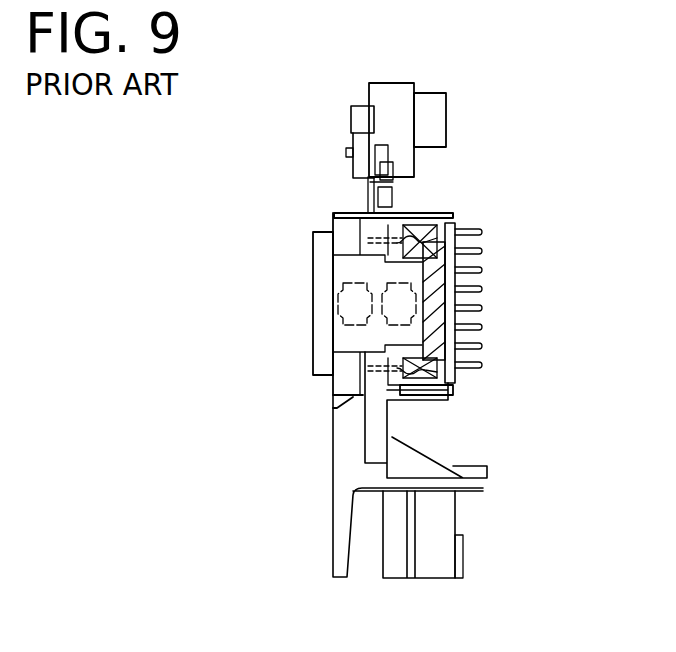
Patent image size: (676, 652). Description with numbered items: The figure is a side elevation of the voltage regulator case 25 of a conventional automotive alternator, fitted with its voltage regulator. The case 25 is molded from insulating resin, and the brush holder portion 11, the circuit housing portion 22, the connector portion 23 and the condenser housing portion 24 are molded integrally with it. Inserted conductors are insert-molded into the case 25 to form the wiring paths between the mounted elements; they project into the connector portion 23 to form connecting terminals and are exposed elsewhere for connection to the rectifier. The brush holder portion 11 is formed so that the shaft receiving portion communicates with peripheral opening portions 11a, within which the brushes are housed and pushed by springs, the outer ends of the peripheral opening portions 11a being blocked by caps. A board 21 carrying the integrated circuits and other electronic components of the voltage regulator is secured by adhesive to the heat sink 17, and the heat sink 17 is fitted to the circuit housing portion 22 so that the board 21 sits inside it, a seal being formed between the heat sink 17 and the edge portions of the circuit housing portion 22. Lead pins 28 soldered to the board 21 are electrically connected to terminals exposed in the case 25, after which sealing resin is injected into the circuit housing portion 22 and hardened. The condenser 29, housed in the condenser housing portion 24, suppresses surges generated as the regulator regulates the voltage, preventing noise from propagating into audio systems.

The brush holder portion 11 is at (328, 340).
The peripheral opening portions 11a is at (353, 305).
The heat sink 17 is at (470, 380).
The board 21 is at (437, 265).
The circuit housing portion 22 is at (420, 243).
The connector portion 23 is at (437, 578).
The condenser housing portion 24 is at (369, 97).
The voltage regulator case 25 is at (327, 213).
The lead pins 28 is at (430, 372).
The condenser 29 is at (446, 117).